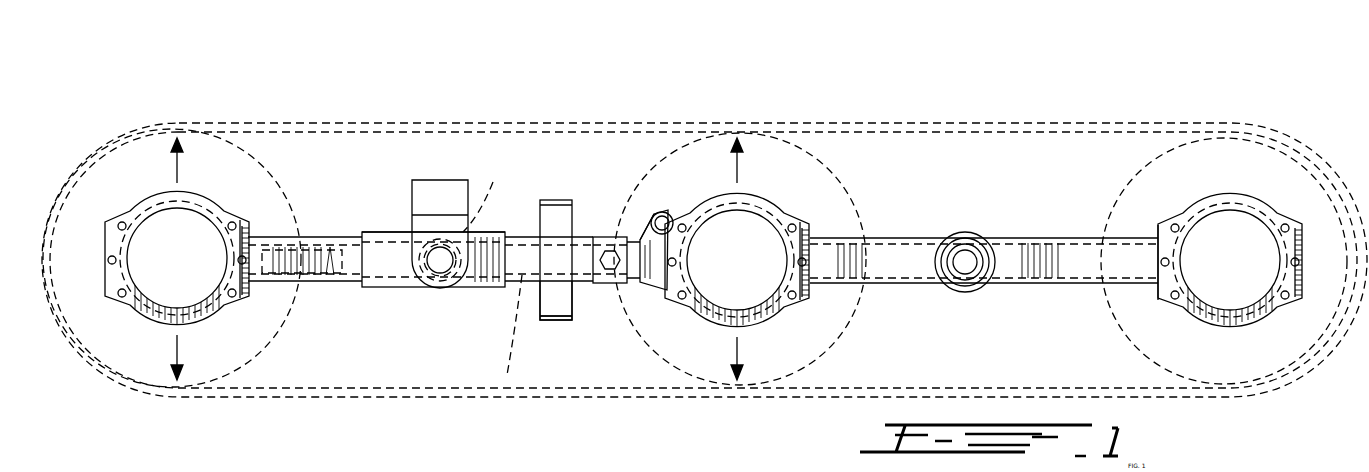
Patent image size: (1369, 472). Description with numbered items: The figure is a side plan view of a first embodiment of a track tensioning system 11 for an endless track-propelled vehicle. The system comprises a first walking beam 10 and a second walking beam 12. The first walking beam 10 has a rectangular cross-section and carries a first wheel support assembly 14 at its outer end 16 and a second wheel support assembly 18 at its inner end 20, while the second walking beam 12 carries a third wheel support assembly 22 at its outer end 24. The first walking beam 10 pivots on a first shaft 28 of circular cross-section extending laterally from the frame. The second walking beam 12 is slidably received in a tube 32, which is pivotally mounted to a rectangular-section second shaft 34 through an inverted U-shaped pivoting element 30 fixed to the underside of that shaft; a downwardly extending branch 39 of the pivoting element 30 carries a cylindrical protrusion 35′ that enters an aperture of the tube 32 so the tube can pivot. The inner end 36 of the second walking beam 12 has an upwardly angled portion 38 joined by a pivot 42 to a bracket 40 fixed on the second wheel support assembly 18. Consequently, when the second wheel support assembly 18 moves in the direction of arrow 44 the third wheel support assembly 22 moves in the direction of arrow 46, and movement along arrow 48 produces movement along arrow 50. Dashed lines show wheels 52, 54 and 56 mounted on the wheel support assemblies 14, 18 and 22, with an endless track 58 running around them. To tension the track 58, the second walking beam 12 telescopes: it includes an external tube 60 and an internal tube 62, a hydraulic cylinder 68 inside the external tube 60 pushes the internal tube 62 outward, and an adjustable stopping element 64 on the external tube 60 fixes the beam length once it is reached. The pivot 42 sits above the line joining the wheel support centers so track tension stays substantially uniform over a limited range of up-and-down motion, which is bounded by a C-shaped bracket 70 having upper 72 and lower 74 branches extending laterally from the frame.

The first walking beam 10 is at (1038, 240).
The track tensioning system 11 is at (78, 132).
The second walking beam 12 is at (520, 236).
The first wheel support assembly 14 is at (1273, 215).
The outer end 16 is at (1166, 232).
The second wheel support assembly 18 is at (780, 215).
The inner end 20 is at (810, 228).
The third wheel support assembly 22 is at (143, 208).
The outer end 24 is at (245, 222).
The first shaft 28 is at (965, 255).
The inverted U-shaped pivoting element 30 is at (406, 226).
The tube 32 is at (383, 290).
The second shaft 34 is at (443, 183).
The second cylindrical protrusion 35′ is at (494, 190).
The inner end 36 is at (641, 226).
The upwardly angled portion 38 is at (653, 272).
The second downwardly extending branch 39 is at (437, 283).
The bracket 40 is at (684, 208).
The pivot 42 is at (661, 214).
The arrow 44 is at (737, 348).
The arrow 46 is at (177, 170).
The arrow 48 is at (737, 170).
The arrow 50 is at (177, 348).
The wheel 52 is at (1155, 352).
The wheel 54 is at (858, 338).
The wheel 56 is at (270, 358).
The endless track 58 is at (507, 386).
The external tube 60 is at (325, 283).
The internal tube 62 is at (501, 325).
The adjustable stopping element 64 is at (607, 285).
The hydraulic cylinder 68 is at (330, 238).
The C-shaped bracket 70 is at (540, 298).
The upper branch 72 is at (566, 200).
The lower branch 74 is at (567, 325).